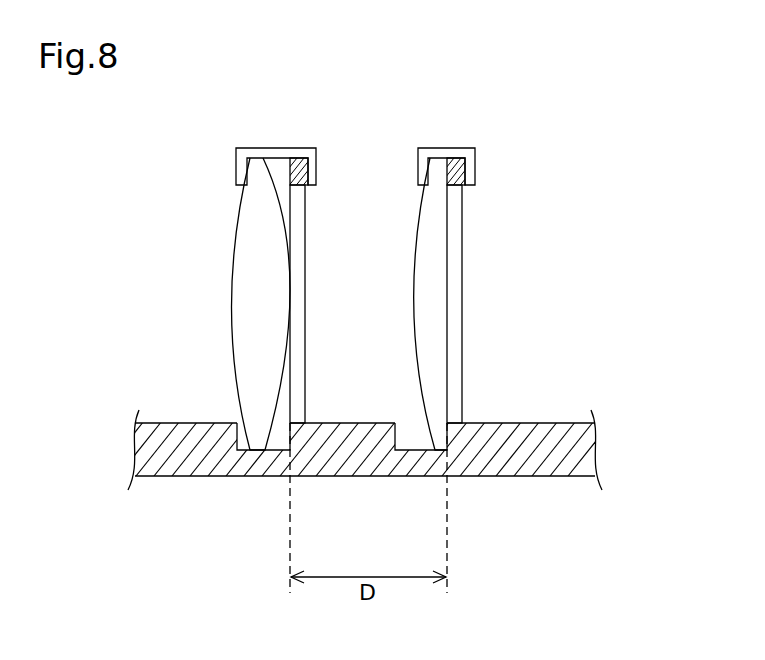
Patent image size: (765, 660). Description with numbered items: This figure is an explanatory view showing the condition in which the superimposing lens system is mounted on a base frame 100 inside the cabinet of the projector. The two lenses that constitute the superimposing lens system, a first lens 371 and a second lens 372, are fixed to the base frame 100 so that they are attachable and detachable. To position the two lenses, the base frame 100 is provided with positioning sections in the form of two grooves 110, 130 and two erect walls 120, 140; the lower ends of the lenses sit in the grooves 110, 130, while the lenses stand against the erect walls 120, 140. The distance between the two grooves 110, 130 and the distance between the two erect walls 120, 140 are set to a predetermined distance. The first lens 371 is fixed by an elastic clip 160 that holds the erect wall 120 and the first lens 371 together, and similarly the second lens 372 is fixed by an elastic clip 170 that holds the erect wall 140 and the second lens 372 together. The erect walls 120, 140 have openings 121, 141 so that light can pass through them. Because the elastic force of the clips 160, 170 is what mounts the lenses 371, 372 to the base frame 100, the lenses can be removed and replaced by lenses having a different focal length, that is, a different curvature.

The base frame 100 is at (346, 477).
The groove 110 is at (418, 445).
The groove 130 is at (275, 441).
The erect wall 120 is at (463, 169).
The opening 121 is at (462, 270).
The erect wall 140 is at (304, 169).
The opening 141 is at (305, 270).
The elastic clip 160 is at (456, 152).
The elastic clip 170 is at (272, 152).
The first lens 371 is at (419, 378).
The second lens 372 is at (236, 378).